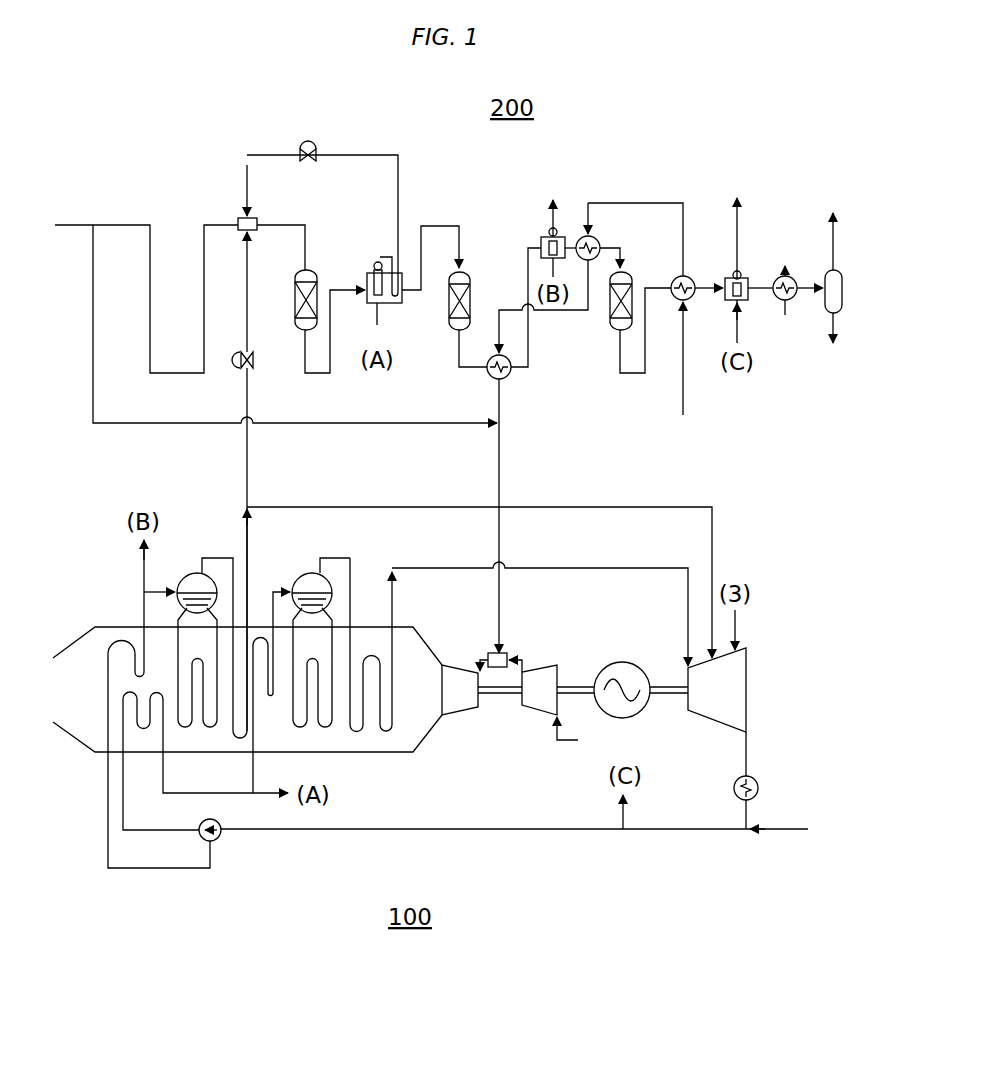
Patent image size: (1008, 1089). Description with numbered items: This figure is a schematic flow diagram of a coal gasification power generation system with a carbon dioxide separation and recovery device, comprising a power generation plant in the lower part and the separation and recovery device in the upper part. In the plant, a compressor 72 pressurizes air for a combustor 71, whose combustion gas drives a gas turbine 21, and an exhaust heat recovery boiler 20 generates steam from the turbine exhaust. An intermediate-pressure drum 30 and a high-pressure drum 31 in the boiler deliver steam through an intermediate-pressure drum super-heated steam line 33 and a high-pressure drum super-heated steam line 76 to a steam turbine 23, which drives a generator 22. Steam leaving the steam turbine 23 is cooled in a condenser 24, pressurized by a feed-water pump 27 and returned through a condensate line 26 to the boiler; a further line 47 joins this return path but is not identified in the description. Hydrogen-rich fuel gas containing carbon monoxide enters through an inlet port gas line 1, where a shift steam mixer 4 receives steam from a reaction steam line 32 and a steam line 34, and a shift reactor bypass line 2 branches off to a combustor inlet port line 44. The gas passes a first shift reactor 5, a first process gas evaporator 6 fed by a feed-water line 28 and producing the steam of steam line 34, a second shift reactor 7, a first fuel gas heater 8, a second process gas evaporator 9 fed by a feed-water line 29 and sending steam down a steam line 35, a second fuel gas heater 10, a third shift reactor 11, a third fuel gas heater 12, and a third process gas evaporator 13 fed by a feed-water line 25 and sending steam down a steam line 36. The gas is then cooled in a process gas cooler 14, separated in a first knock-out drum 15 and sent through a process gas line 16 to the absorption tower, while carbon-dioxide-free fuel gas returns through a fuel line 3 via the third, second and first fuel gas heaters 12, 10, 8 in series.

The inlet port gas line 1 is at (131, 225).
The shift reactor bypass line 2 is at (114, 423).
The fuel line 3 is at (683, 393).
The shift steam mixer 4 is at (246, 207).
The first shift reactor 5 is at (296, 302).
The first process gas evaporator 6 is at (404, 302).
The second shift reactor 7 is at (471, 300).
The first fuel gas heater 8 is at (512, 378).
The second process gas evaporator 9 is at (540, 240).
The second fuel gas heater 10 is at (598, 243).
The third shift reactor 11 is at (611, 312).
The third fuel gas heater 12 is at (693, 278).
The third process gas evaporator 13 is at (750, 302).
The process gas cooler 14 is at (795, 277).
The first knock-out drum 15 is at (843, 302).
The process gas line 16 is at (834, 235).
The exhaust heat recovery boiler 20 is at (428, 748).
The gas turbine 21 is at (545, 716).
The generator 22 is at (628, 662).
The steam turbine 23 is at (747, 690).
The condenser 24 is at (758, 788).
The feed-water line 25 is at (626, 820).
The condensate line 26 is at (556, 830).
The feed-water pump 27 is at (218, 840).
The feed-water line 28 is at (272, 796).
The feed-water line 29 is at (144, 572).
The intermediate-pressure drum 30 is at (190, 573).
The high-pressure drum 31 is at (295, 575).
The reaction steam line 32 is at (247, 387).
The intermediate-pressure drum super-heated steam line 33 is at (686, 507).
The steam line 34 is at (399, 215).
The steam line 35 is at (554, 215).
The steam line 36 is at (738, 235).
The combustor inlet port line 44 is at (500, 478).
The cooling water line 47 is at (780, 830).
The combustor 71 is at (510, 655).
The compressor 72 is at (465, 668).
The high-pressure drum super-heated steam line 76 is at (626, 568).